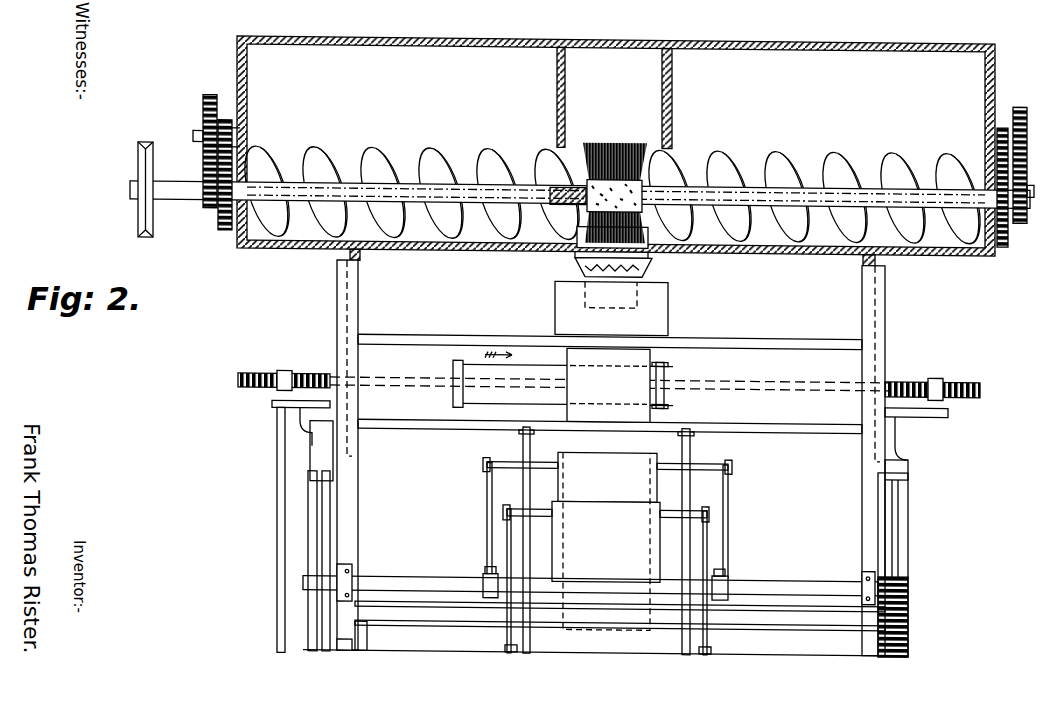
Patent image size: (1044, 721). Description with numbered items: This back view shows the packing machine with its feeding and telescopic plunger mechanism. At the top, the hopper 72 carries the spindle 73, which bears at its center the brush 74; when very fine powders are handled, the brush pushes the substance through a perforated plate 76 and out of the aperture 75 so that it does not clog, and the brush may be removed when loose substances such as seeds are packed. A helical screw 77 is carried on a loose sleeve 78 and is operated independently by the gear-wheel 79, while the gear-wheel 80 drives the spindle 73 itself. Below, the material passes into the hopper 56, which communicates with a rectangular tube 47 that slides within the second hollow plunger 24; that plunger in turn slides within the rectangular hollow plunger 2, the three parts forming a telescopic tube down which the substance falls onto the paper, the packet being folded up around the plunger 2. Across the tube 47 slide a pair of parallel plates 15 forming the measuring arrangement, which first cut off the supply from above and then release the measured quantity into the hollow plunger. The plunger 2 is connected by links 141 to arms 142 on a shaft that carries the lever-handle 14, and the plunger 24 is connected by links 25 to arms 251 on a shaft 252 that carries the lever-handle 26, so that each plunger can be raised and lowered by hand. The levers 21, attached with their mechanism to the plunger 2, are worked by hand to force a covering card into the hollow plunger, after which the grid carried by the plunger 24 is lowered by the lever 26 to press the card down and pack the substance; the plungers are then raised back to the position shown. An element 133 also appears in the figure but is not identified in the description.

The hollow plunger 2 is at (606, 541).
The lever-handle 14 is at (322, 506).
The parallel plates 15 is at (530, 362).
The levers 21 is at (530, 609).
The second hollow plunger 24 is at (607, 477).
The links 25 is at (487, 490).
The lever-handle 26 is at (895, 525).
The rectangular tube 47 is at (608, 385).
The hopper 56 is at (655, 313).
The hopper 72 is at (772, 36).
The spindle 73 is at (172, 200).
The brush 74 is at (628, 150).
The aperture 75 is at (650, 258).
The perforated plate 76 is at (648, 231).
The helical screw 77 is at (497, 163).
The loose sleeve 78 is at (222, 219).
The gear-wheel 79 is at (1008, 229).
The gear-wheel 80 is at (205, 161).
The clamp 133 is at (362, 649).
The links 141 is at (507, 546).
The arms 142 is at (510, 647).
The arms 251 is at (483, 571).
The shaft 252 is at (590, 585).